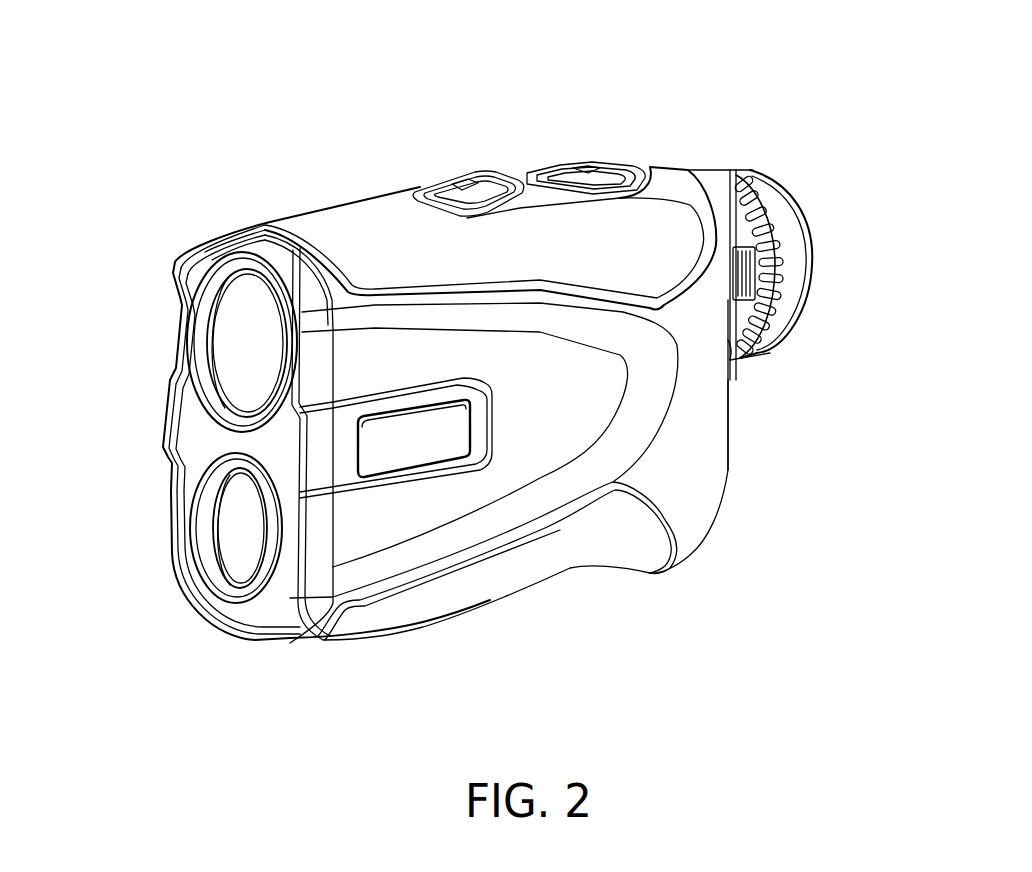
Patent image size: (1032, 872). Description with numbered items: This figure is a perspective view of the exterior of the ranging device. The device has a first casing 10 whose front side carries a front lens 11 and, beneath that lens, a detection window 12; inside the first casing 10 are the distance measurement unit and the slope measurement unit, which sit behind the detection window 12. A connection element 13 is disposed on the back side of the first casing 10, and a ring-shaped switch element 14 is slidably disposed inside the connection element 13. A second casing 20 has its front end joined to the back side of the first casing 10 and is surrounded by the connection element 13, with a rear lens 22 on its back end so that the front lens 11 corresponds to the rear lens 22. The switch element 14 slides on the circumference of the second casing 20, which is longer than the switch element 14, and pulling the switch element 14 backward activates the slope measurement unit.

The first casing 10 is at (328, 207).
The front lens 11 is at (243, 333).
The detection window 12 is at (230, 537).
The connection element 13 is at (696, 171).
The switch element 14 is at (737, 362).
The second casing 20 is at (755, 170).
The rear lens 22 is at (808, 242).